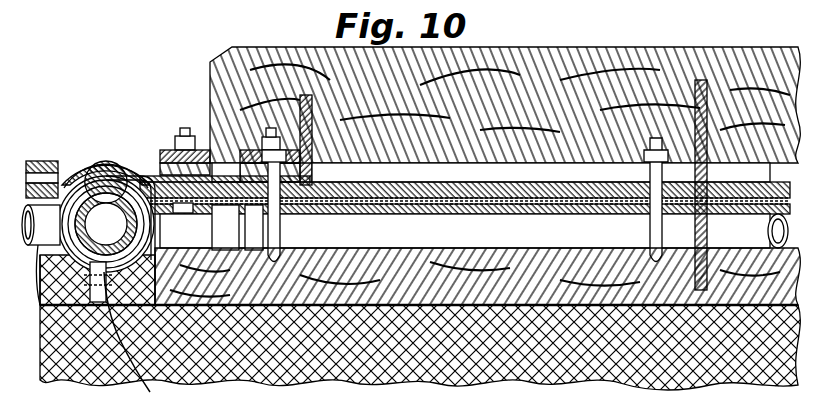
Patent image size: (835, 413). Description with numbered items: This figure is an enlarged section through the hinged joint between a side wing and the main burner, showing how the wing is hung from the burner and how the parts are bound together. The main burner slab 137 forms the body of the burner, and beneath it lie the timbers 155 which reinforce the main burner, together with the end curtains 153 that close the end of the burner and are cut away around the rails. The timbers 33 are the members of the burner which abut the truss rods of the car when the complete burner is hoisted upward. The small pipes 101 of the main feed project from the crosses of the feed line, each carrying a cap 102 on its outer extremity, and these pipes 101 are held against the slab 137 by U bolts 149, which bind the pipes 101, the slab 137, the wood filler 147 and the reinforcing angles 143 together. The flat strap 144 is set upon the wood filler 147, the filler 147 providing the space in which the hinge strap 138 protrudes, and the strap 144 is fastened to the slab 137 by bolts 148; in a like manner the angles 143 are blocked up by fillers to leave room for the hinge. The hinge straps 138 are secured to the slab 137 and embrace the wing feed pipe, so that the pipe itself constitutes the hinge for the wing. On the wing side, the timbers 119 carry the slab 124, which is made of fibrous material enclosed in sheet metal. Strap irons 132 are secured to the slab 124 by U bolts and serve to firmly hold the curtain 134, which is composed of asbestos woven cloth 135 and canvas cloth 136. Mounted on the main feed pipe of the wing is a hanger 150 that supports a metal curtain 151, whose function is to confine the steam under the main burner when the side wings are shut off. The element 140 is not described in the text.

The timbers 33 is at (290, 48).
The small pipes 101 is at (474, 231).
The cap 102 is at (218, 226).
The timbers 119 is at (42, 380).
The slab 124 is at (43, 163).
The strap irons 132 is at (40, 160).
The curtain 134 is at (86, 165).
The asbestos woven cloth 135 is at (95, 170).
The canvas cloth 136 is at (110, 172).
The main burner slab 137 is at (395, 190).
The hinge straps 138 is at (160, 150).
The partition plate 140 is at (707, 90).
The reenforcing angles 143 is at (312, 108).
The flat strap 144 is at (185, 136).
The wood filler 147 is at (312, 172).
The bolts 148 is at (263, 140).
The U bolts 149 is at (280, 220).
The hanger 150 is at (140, 323).
The metal curtain 151 is at (150, 392).
The end curtains 153 is at (420, 347).
The timbers 155 is at (477, 276).